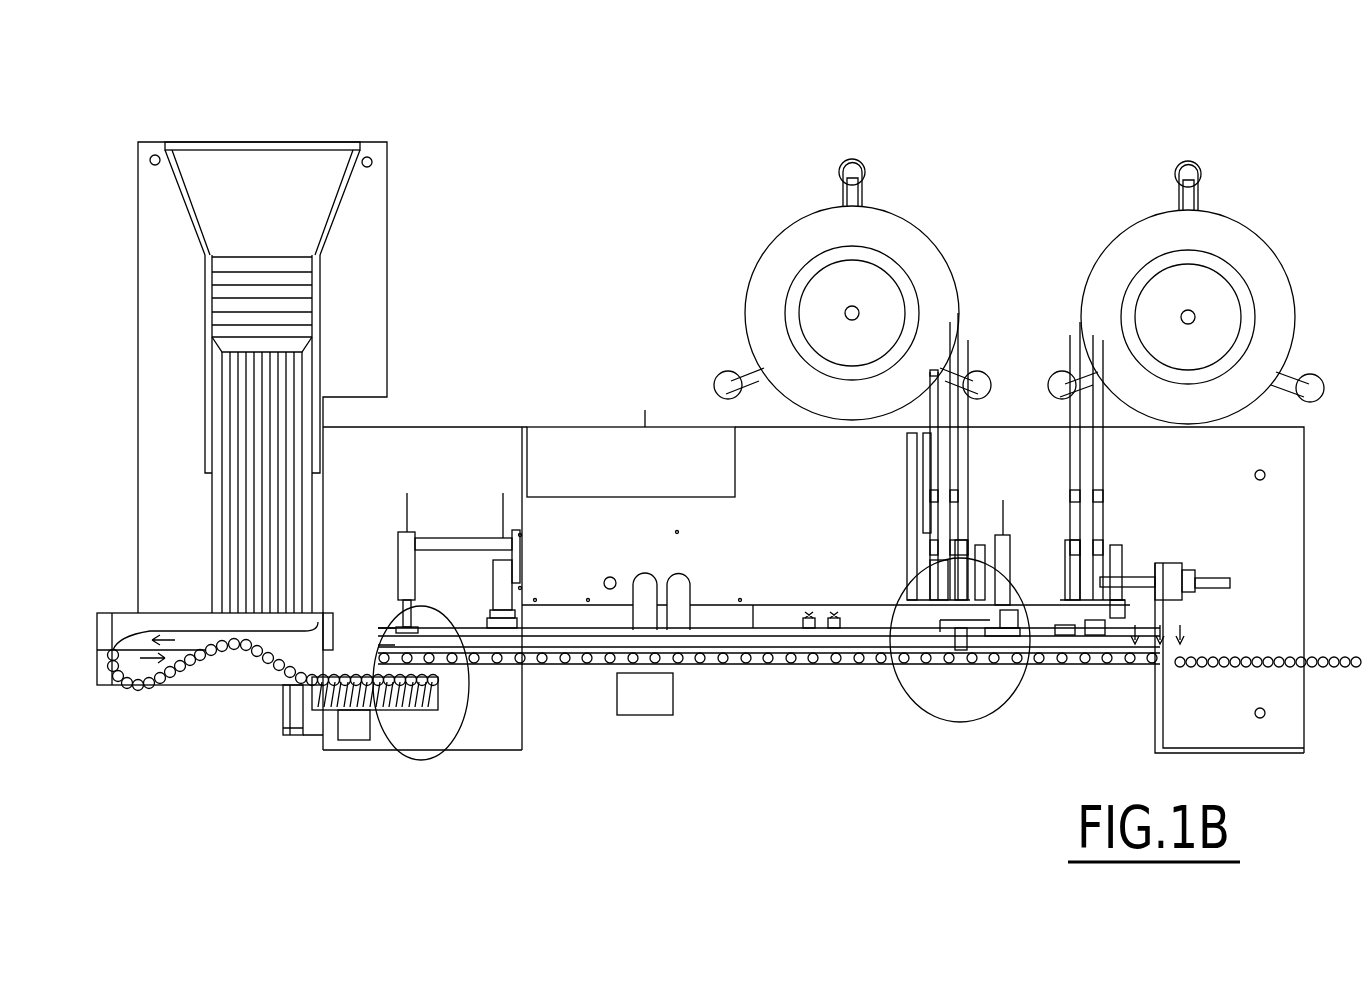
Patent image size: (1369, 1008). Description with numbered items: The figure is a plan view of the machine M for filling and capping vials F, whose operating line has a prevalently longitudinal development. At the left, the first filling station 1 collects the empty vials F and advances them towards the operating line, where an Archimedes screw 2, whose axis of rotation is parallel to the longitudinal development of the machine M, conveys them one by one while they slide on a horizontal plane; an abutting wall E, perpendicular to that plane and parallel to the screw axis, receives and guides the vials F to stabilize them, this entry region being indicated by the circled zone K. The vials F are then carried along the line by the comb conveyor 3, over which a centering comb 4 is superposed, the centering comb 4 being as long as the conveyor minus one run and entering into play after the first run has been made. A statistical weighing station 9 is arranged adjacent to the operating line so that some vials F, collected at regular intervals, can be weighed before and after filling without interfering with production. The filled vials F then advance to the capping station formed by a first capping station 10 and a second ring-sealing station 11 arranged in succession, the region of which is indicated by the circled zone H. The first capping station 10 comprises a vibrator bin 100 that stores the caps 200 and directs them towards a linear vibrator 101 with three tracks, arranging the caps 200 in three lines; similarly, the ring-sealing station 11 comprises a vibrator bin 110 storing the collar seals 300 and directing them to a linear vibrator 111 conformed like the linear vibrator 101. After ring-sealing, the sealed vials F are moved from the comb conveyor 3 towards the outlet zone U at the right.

The first filling station 1 is at (197, 632).
The Archimedes screw 2 is at (345, 700).
The comb conveyor 3 is at (474, 640).
The centering comb 4 is at (563, 650).
The statistical weighing station 9 is at (641, 700).
The first capping station 10 is at (967, 243).
The second ring-sealing station 11 is at (1083, 236).
The vibrator bin 100 is at (910, 222).
The linear vibrator 101 is at (960, 352).
The vibrator bin 110 is at (1272, 252).
The linear vibrator 111 is at (1078, 415).
The caps 200 is at (975, 600).
The collar seals 300 is at (1120, 578).
The abutting wall E is at (357, 666).
The vials F is at (586, 665).
The wrapping zone H is at (951, 722).
The loading zone K is at (428, 760).
The machine M is at (548, 190).
The outlet zone U is at (1264, 638).